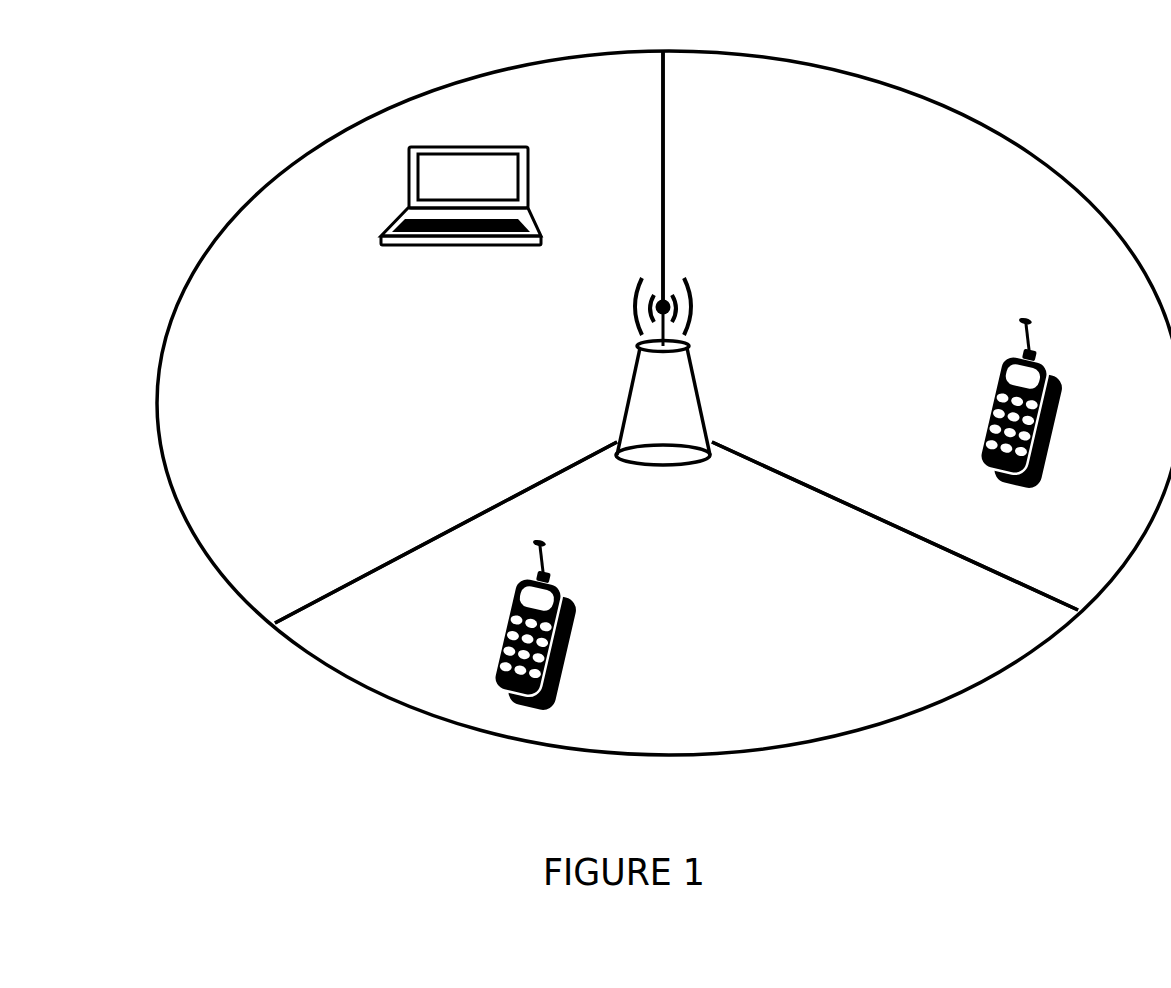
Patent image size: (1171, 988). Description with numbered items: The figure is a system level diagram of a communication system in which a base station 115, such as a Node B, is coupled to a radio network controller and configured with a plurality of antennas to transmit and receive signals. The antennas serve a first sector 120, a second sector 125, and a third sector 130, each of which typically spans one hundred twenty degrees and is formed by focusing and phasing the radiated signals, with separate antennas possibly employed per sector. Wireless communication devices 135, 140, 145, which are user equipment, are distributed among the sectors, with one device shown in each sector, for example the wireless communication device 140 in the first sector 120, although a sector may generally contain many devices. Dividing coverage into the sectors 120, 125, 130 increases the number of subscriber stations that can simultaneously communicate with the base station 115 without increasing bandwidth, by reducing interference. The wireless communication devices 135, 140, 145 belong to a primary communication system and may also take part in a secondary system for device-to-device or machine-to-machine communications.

The base station 115 is at (683, 438).
The first sector 120 is at (890, 284).
The second sector 125 is at (680, 733).
The third sector 130 is at (417, 382).
The wireless communication device 135 is at (489, 194).
The wireless communication device 140 is at (980, 392).
The wireless communication device 145 is at (492, 612).